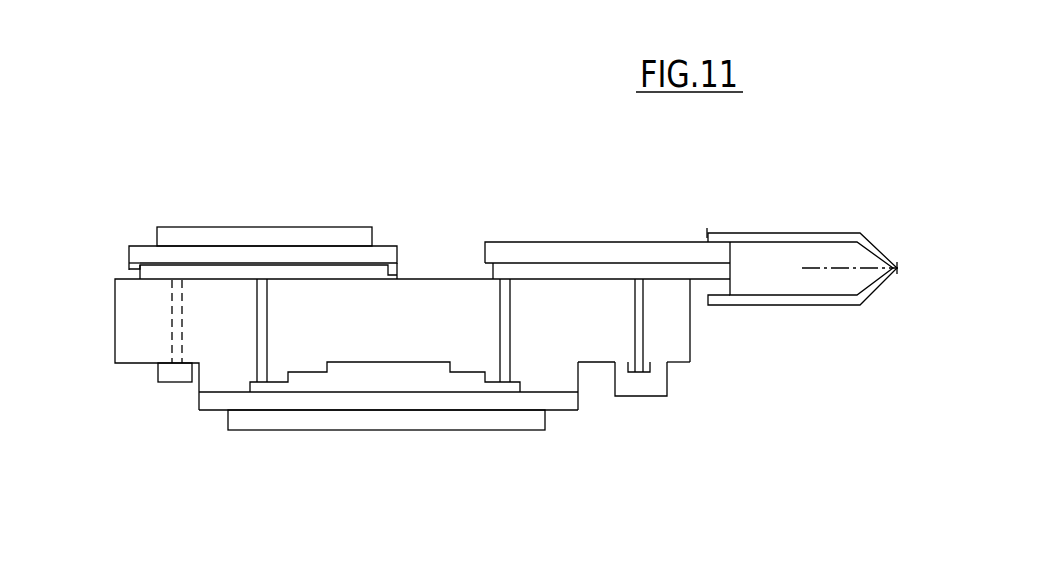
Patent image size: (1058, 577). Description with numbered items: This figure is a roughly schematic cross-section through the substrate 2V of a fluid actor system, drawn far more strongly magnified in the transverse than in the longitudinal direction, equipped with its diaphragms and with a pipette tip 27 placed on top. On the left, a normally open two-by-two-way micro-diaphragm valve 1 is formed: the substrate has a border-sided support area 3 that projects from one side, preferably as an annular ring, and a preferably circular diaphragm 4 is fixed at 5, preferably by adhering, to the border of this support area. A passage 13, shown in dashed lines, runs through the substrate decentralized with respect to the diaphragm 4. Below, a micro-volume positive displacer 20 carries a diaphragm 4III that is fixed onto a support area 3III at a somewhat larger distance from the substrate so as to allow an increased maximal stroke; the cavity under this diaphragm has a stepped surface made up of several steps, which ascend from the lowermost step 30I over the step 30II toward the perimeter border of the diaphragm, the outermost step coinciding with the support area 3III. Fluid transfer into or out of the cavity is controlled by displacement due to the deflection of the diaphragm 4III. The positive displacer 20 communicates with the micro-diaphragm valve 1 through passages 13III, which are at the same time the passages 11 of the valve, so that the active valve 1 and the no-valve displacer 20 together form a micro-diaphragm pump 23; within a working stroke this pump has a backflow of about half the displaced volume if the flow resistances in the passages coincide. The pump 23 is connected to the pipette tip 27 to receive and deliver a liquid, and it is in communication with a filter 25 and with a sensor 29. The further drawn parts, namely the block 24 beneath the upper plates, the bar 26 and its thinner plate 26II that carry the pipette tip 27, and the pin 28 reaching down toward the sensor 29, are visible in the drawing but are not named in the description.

The micro-diaphragm valve 1 is at (313, 210).
The housing block 2V is at (130, 327).
The support area 3 is at (134, 270).
The diaphragm 4 is at (210, 246).
The fixing location 5 is at (128, 247).
The passage 13 is at (172, 330).
The micro-volume positive displacer 20 is at (317, 446).
The micro-diaphragm pump 23 is at (390, 232).
The body 24 is at (437, 238).
The filter 25 is at (177, 376).
The passage 11 is at (262, 352).
The diaphragm 4III is at (402, 411).
The lowermost step 30I is at (310, 371).
The step 30II is at (280, 381).
The support area 3III is at (222, 391).
The holder bar 26 is at (547, 250).
The holder plate 26II is at (487, 275).
The passage 13III is at (510, 331).
The sensor 29 is at (635, 388).
The pin 28 is at (643, 326).
The pipette tip 27 is at (812, 305).